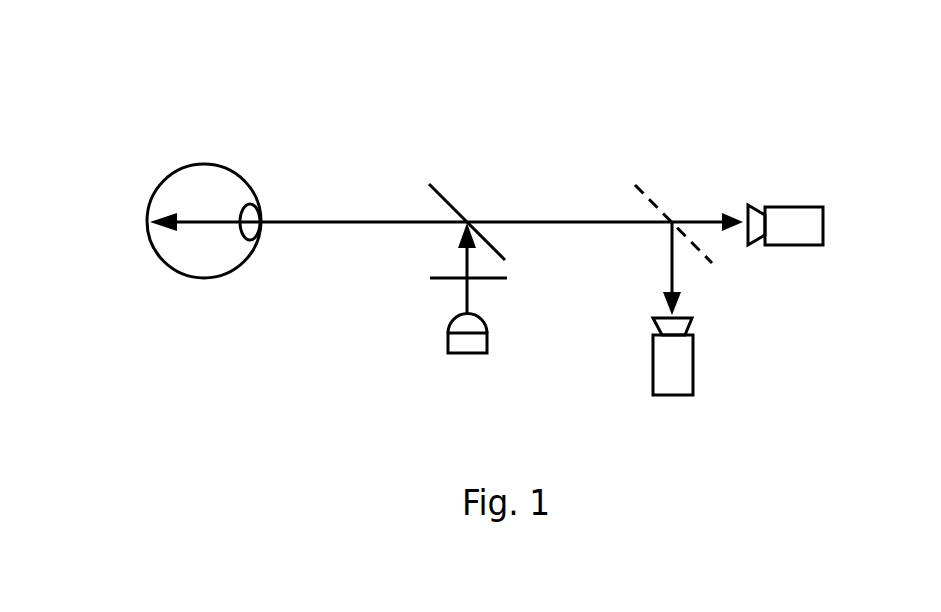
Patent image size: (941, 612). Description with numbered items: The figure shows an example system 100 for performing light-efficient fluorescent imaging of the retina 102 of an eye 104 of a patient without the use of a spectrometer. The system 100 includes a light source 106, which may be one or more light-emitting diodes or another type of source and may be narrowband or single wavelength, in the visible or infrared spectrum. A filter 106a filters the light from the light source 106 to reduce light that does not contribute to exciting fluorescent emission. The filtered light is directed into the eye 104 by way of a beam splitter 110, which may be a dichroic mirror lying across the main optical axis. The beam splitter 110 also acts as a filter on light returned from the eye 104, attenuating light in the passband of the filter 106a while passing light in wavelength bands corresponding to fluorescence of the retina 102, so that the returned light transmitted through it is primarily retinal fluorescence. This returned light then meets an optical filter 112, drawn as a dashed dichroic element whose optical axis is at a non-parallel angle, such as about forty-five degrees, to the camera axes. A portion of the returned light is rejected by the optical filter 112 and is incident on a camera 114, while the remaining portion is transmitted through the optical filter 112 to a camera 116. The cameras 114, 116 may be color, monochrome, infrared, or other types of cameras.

The system 100 is at (827, 122).
The retina 102 is at (150, 205).
The eye 104 is at (187, 240).
The light source 106 is at (487, 333).
The filter 106a is at (430, 278).
The beam splitter 110 is at (450, 200).
The optical filter 112 is at (653, 203).
The camera 114 is at (675, 372).
The camera 116 is at (823, 223).